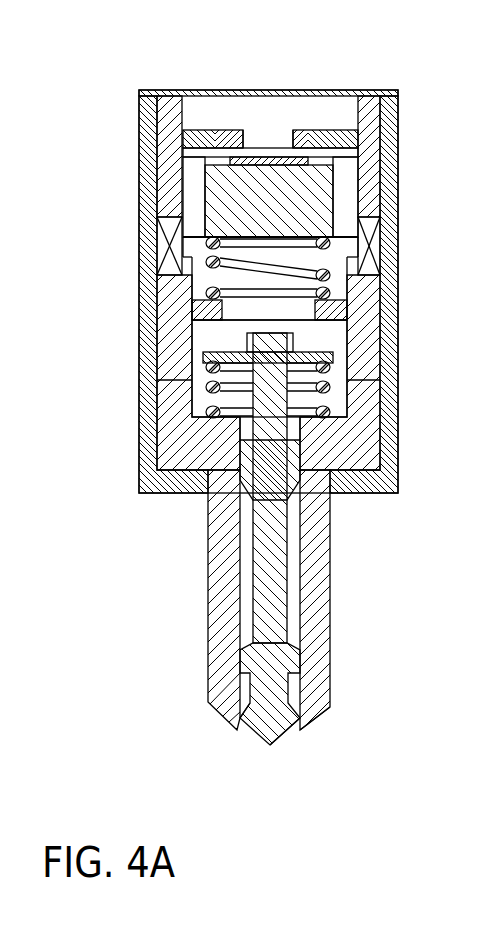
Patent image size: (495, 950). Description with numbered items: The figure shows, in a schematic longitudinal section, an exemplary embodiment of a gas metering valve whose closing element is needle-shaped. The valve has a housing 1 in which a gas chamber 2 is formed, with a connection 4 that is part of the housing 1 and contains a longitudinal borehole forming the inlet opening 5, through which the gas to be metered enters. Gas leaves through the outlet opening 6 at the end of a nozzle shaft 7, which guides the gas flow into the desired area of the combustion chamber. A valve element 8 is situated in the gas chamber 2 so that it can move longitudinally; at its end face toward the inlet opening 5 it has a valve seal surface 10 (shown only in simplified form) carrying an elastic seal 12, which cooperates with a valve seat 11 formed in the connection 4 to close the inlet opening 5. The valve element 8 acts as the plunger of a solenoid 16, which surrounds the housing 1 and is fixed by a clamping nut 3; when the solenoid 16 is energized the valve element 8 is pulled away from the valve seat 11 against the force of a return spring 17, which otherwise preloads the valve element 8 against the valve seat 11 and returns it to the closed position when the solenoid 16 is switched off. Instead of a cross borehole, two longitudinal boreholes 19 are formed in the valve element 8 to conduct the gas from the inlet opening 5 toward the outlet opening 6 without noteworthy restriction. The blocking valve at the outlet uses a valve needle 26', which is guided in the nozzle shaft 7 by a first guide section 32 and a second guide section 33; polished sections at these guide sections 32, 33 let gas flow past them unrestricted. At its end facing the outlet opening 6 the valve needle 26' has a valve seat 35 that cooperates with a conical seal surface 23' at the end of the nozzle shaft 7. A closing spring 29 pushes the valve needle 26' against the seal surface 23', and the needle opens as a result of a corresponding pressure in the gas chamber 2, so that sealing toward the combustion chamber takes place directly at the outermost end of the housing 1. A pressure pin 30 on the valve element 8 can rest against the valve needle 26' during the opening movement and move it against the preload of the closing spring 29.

The housing 1 is at (130, 137).
The gas chamber 2 is at (345, 291).
The clamping nut 3 is at (392, 127).
The connection 4 is at (362, 118).
The inlet opening 5 is at (257, 142).
The outlet opening 6 is at (313, 718).
The nozzle shaft 7 is at (225, 615).
The valve element 8 is at (296, 196).
The valve seal surface 10 is at (303, 130).
The valve seat 11 is at (218, 130).
The elastic seal 12 is at (280, 143).
The solenoid 16 is at (168, 245).
The return spring 17 is at (172, 293).
The longitudinal borehole 19 is at (198, 185).
The conical seal surface 23' is at (249, 761).
The valve needle 26' is at (295, 488).
The closing spring 29 is at (330, 393).
The pressure pin 30 is at (272, 310).
The first guide section 32 is at (247, 490).
The second guide section 33 is at (244, 667).
The valve seat 35 is at (317, 705).